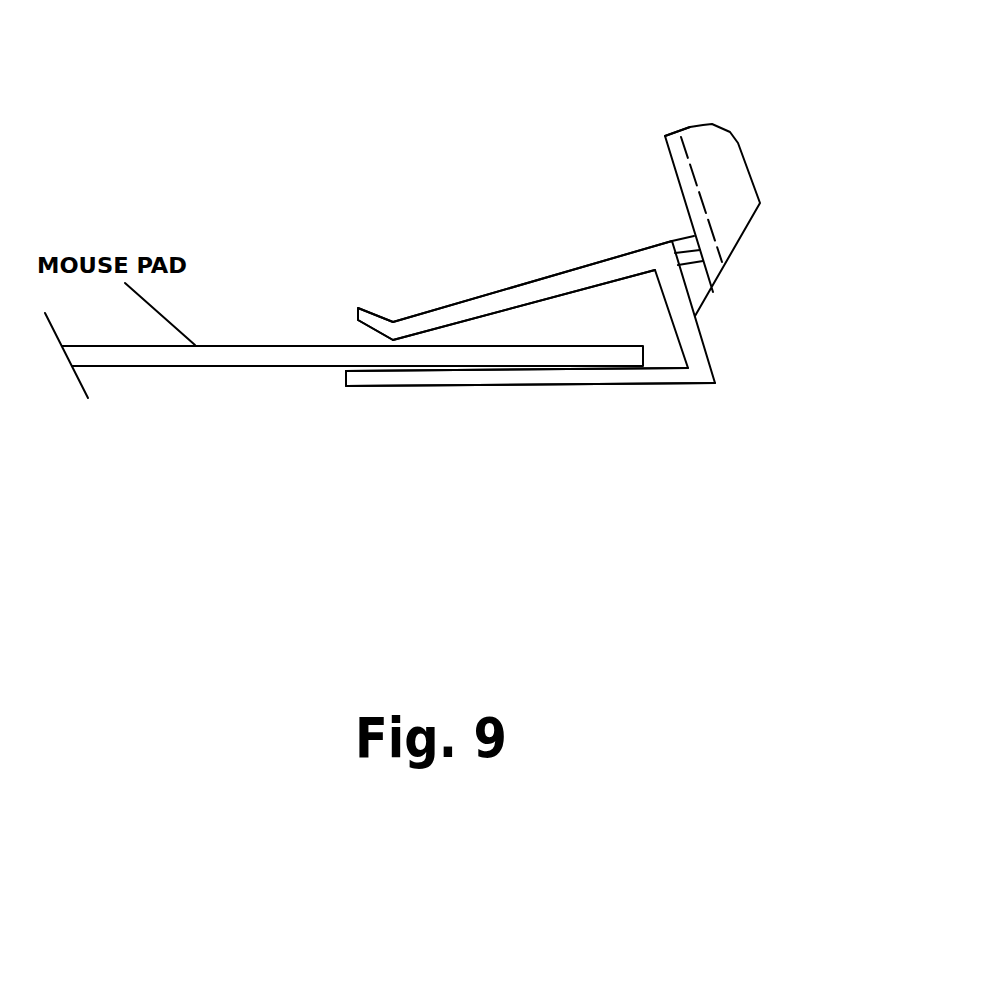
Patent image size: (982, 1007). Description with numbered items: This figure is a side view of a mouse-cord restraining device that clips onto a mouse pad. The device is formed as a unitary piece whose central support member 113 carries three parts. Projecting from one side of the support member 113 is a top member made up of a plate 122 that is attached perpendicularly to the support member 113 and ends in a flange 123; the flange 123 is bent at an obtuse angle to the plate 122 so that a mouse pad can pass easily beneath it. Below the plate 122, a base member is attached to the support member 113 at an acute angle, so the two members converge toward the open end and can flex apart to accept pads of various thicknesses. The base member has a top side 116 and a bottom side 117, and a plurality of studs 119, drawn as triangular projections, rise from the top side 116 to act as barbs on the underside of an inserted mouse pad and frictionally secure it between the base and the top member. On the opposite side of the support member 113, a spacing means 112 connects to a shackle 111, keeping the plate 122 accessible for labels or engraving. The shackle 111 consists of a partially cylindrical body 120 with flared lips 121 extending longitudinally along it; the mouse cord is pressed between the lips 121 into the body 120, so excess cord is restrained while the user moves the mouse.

The shackle 111 is at (665, 137).
The spacing means 112 is at (683, 240).
The support member 113 is at (707, 360).
The top side 116 is at (552, 366).
The bottom side 117 is at (633, 385).
The studs 119 is at (387, 363).
The partially cylindrical body 120 is at (667, 155).
The flared lips 121 is at (748, 168).
The plate 122 is at (456, 303).
The flange 123 is at (370, 312).